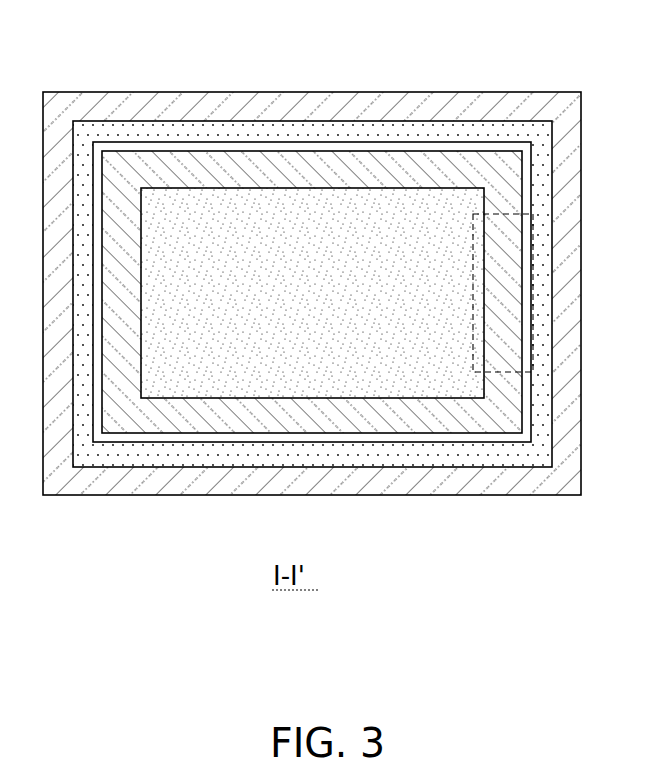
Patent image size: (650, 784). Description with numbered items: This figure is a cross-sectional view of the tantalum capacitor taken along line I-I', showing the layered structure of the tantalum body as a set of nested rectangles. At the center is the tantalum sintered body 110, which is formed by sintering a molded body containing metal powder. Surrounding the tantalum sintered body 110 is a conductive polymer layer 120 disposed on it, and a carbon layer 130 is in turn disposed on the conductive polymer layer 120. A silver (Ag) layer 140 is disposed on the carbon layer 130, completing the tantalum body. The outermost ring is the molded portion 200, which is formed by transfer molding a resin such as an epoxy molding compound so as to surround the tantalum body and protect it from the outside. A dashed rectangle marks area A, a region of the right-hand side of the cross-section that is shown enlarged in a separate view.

The tantalum sintered body 110 is at (163, 208).
The conductive polymer layer 120 is at (228, 172).
The carbon layer 130 is at (290, 150).
The silver (Ag) layer 140 is at (353, 138).
The molded portion 200 is at (479, 108).
The area A is at (533, 214).